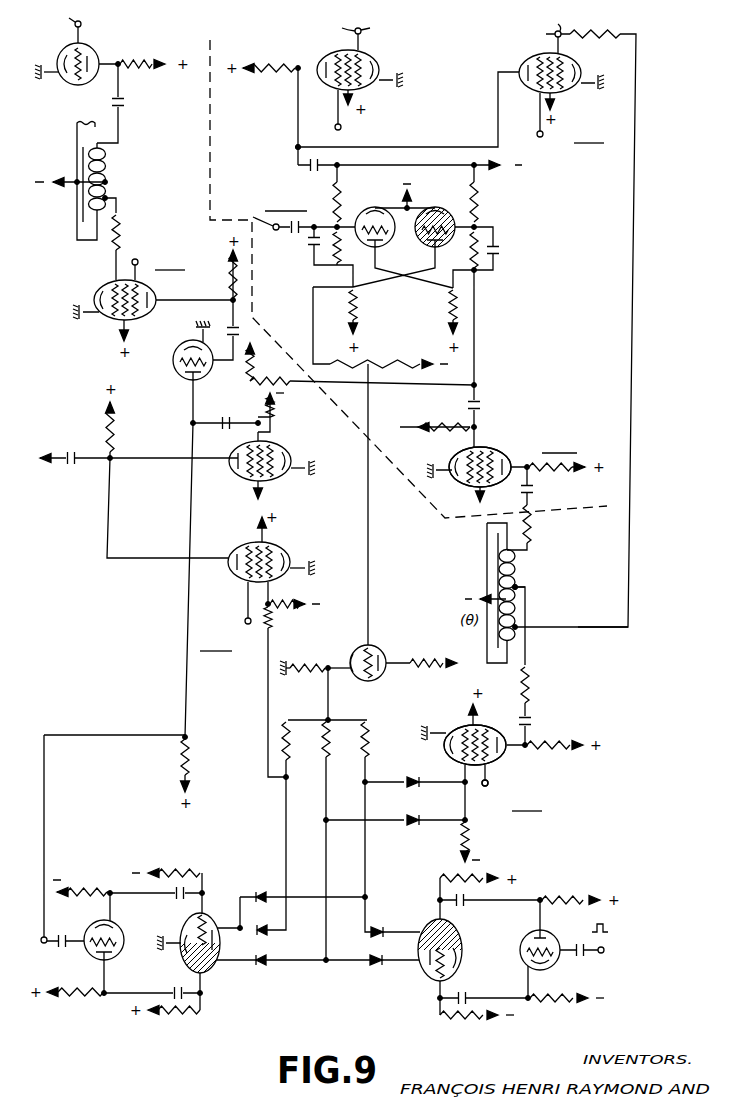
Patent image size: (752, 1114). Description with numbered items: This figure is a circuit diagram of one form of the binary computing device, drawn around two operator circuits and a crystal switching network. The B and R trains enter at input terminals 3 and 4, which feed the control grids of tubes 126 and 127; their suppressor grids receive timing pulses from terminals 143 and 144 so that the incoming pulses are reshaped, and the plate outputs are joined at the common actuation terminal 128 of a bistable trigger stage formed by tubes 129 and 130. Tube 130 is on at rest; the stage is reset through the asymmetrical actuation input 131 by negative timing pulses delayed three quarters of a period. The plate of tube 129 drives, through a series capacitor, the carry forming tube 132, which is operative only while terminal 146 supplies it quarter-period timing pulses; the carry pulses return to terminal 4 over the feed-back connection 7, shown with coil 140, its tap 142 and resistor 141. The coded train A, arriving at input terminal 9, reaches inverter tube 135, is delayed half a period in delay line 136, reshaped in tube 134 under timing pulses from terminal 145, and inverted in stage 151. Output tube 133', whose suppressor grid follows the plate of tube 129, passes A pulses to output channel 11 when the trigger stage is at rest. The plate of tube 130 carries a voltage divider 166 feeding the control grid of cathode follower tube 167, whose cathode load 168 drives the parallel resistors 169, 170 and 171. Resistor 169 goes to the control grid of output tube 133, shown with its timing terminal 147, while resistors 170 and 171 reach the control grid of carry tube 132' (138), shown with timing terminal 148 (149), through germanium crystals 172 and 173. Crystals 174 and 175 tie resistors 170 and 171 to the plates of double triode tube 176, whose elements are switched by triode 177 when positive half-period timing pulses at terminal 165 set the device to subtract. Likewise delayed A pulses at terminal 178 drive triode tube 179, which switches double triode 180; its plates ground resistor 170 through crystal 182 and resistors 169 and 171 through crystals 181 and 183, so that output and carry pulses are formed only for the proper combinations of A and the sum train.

The terminal A 9 is at (69, 22).
The inverter tube 135 is at (74, 84).
The delay line 136 is at (75, 158).
The terminal 145 is at (134, 259).
The re-shaping tube 134 is at (112, 322).
The inverter stage 151 is at (178, 373).
The output channel 11 is at (52, 465).
The output tube 133' is at (274, 453).
The output tube 133 is at (272, 556).
The terminal T/θ/2 147 is at (244, 621).
The input terminal 3 is at (346, 33).
The input tube 126 is at (366, 90).
The terminal 143 is at (335, 128).
The actuation terminal 128 is at (298, 148).
The asymmetrical actuation input 131 is at (279, 221).
The trigger stage tube 129 is at (387, 209).
The trigger stage tube 130 is at (448, 210).
The voltage divider 166 is at (372, 360).
The input terminal 4 is at (548, 25).
The input tube 127 is at (564, 72).
The terminal 144 is at (538, 136).
The terminal 146 is at (486, 445).
The carry forming tube 132 is at (469, 477).
The resistor 141 is at (530, 545).
The inductance coil (θ) 140 is at (487, 578).
The coil tap 142 is at (529, 587).
The feedback line 7 is at (585, 627).
The cathode follower tube 167 is at (382, 658).
The cathode load 168 is at (329, 665).
The carry tube 132' is at (466, 726).
The carry tube 138 is at (458, 729).
The terminal T/θ/2 148 is at (488, 786).
The terminal T/θ/2 149 is at (522, 781).
The resistor 169 is at (286, 729).
The resistor 170 is at (326, 729).
The resistor 171 is at (366, 729).
The unidirectionally conductive element 173 is at (409, 779).
The unidirectionally conductive element 172 is at (407, 824).
The crystal 183 is at (262, 891).
The crystal 181 is at (269, 927).
The crystal 182 is at (267, 963).
The germanium crystal 175 is at (372, 931).
The germanium crystal 174 is at (372, 962).
The double triode tube 176 is at (463, 961).
The triode 177 is at (532, 938).
The input terminal 165 is at (596, 954).
The input terminal 178 is at (40, 942).
The triode tube 179 is at (128, 927).
The double triode 180 is at (183, 972).